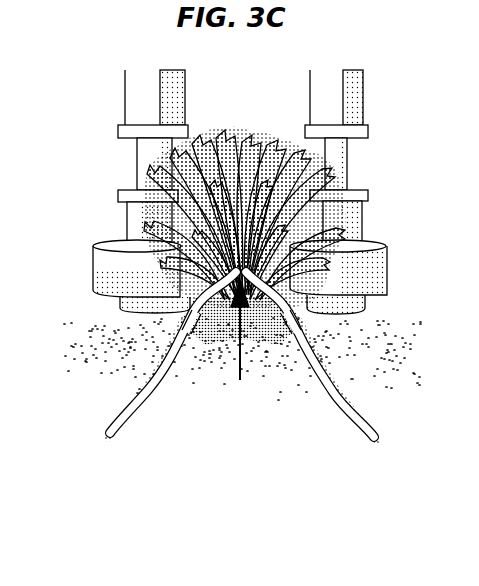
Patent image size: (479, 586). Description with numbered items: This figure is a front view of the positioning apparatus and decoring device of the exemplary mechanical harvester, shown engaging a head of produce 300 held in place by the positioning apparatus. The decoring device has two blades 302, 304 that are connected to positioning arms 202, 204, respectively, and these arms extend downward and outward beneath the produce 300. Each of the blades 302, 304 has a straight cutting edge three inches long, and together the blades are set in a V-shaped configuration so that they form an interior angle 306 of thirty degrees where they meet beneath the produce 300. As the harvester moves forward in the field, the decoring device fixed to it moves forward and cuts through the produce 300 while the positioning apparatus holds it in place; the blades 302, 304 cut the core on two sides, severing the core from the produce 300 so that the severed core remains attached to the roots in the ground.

The produce 300 is at (310, 158).
The blade 302 is at (184, 320).
The blade 304 is at (298, 316).
The interior angle 306 is at (242, 344).
The positioning arm 202 is at (122, 450).
The positioning arm 204 is at (345, 450).